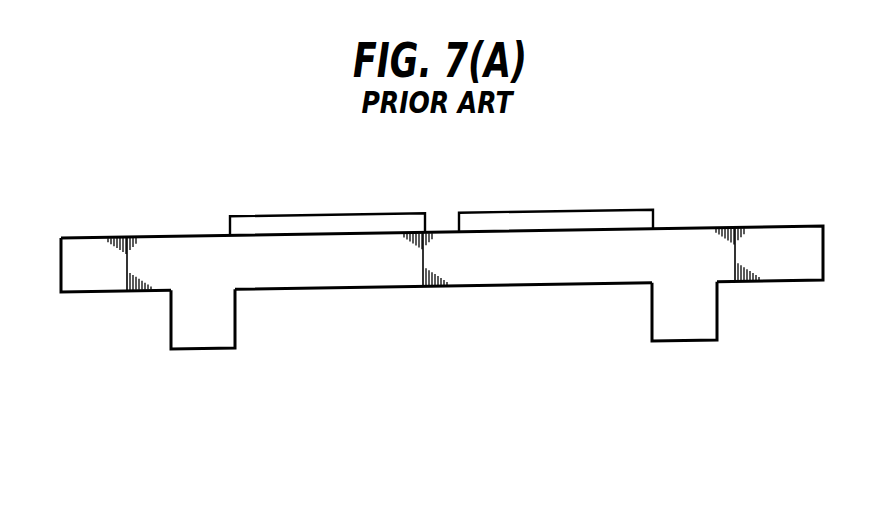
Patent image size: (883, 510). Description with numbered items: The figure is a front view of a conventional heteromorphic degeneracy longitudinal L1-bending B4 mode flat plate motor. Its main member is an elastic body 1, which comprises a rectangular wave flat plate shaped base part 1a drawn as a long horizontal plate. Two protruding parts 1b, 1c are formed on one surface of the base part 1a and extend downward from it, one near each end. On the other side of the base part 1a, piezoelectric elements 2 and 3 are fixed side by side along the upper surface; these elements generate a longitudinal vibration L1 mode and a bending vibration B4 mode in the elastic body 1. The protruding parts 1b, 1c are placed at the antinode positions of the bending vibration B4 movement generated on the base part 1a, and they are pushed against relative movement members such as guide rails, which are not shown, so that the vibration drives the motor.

The elastic body 1 is at (777, 243).
The base part 1a is at (156, 253).
The protruding part 1b is at (201, 329).
The protruding part 1c is at (682, 320).
The piezoelectric element 2 is at (328, 228).
The piezoelectric element 3 is at (563, 222).